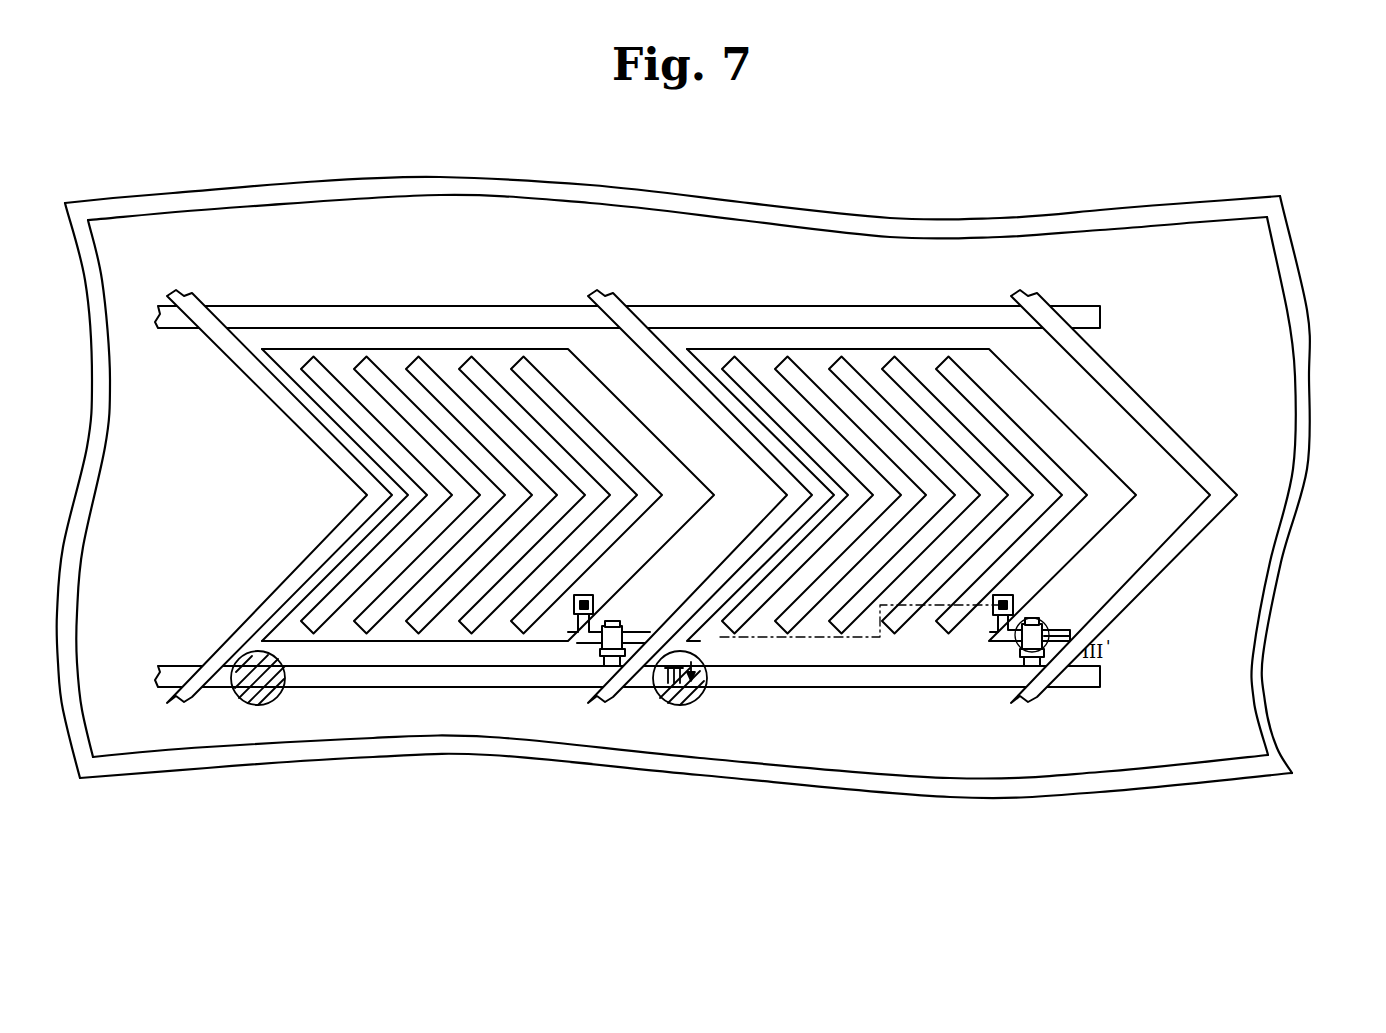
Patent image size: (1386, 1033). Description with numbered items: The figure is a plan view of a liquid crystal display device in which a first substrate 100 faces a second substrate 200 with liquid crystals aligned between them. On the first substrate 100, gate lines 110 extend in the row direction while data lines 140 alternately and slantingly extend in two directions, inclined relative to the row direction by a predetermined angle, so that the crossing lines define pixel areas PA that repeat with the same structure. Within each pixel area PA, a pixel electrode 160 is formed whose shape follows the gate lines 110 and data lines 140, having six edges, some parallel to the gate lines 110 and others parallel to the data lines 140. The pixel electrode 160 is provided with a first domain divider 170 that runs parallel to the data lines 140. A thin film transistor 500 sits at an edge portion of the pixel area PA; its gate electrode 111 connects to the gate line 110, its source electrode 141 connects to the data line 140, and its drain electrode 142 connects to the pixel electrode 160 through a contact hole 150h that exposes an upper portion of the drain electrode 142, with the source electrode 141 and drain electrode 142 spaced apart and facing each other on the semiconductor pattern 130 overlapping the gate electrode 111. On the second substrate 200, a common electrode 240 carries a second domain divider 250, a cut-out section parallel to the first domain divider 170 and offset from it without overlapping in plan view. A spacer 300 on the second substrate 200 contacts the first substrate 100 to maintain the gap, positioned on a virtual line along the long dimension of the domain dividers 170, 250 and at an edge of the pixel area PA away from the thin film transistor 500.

The first substrate 100 is at (716, 487).
The gate line 110 is at (1100, 318).
The gate electrode 111 is at (1057, 668).
The semiconductor pattern 130 is at (1030, 618).
The data line 140 is at (177, 705).
The source electrode 141 is at (1062, 648).
The drain electrode 142 is at (1010, 646).
The contact hole 150h is at (1003, 634).
The pixel electrode 160 is at (325, 408).
The first domain divider 170 is at (366, 357).
The second substrate 200 is at (1277, 675).
The common electrode 240 is at (1273, 550).
The second domain divider 250 is at (313, 357).
The spacer 300 is at (258, 705).
The thin film transistor 500 is at (1046, 628).
The pixel area PA is at (690, 336).